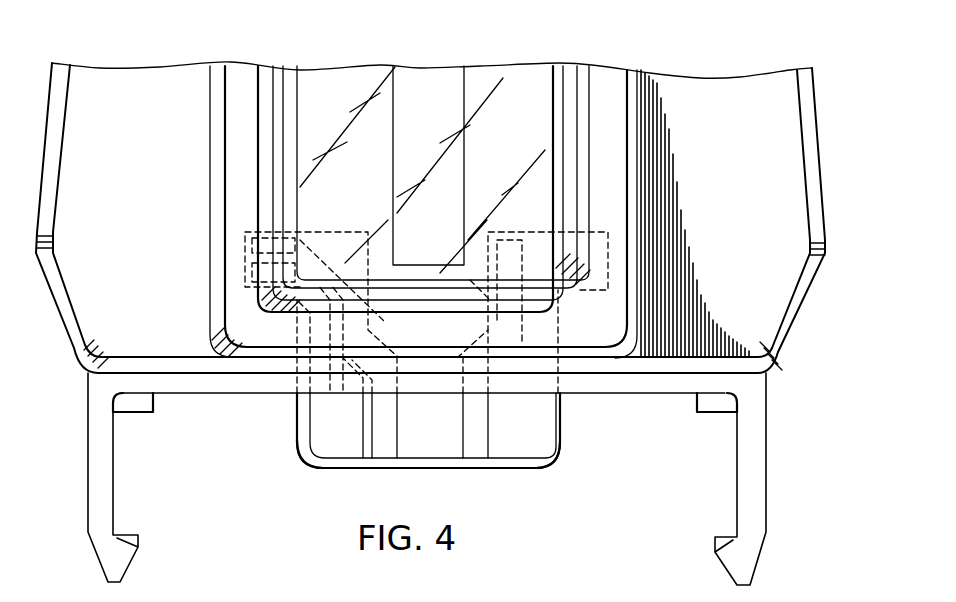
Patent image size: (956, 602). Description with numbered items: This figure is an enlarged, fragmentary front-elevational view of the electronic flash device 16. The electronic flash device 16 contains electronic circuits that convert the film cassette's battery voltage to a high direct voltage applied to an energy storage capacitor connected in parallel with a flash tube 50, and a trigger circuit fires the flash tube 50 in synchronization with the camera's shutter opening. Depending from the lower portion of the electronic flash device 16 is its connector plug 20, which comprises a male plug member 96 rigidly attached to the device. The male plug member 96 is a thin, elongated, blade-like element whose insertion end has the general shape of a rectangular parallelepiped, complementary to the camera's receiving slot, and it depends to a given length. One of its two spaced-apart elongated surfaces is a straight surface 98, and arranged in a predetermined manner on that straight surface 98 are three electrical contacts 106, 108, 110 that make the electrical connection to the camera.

The electronic flash device 16 is at (835, 194).
The flash tube 50 is at (428, 85).
The connector plug 20 is at (563, 428).
The male plug member 96 is at (551, 456).
The straight surface 98 is at (303, 441).
The electrical contact 106 is at (479, 452).
The electrical contact 108 is at (387, 452).
The electrical contact 110 is at (337, 452).